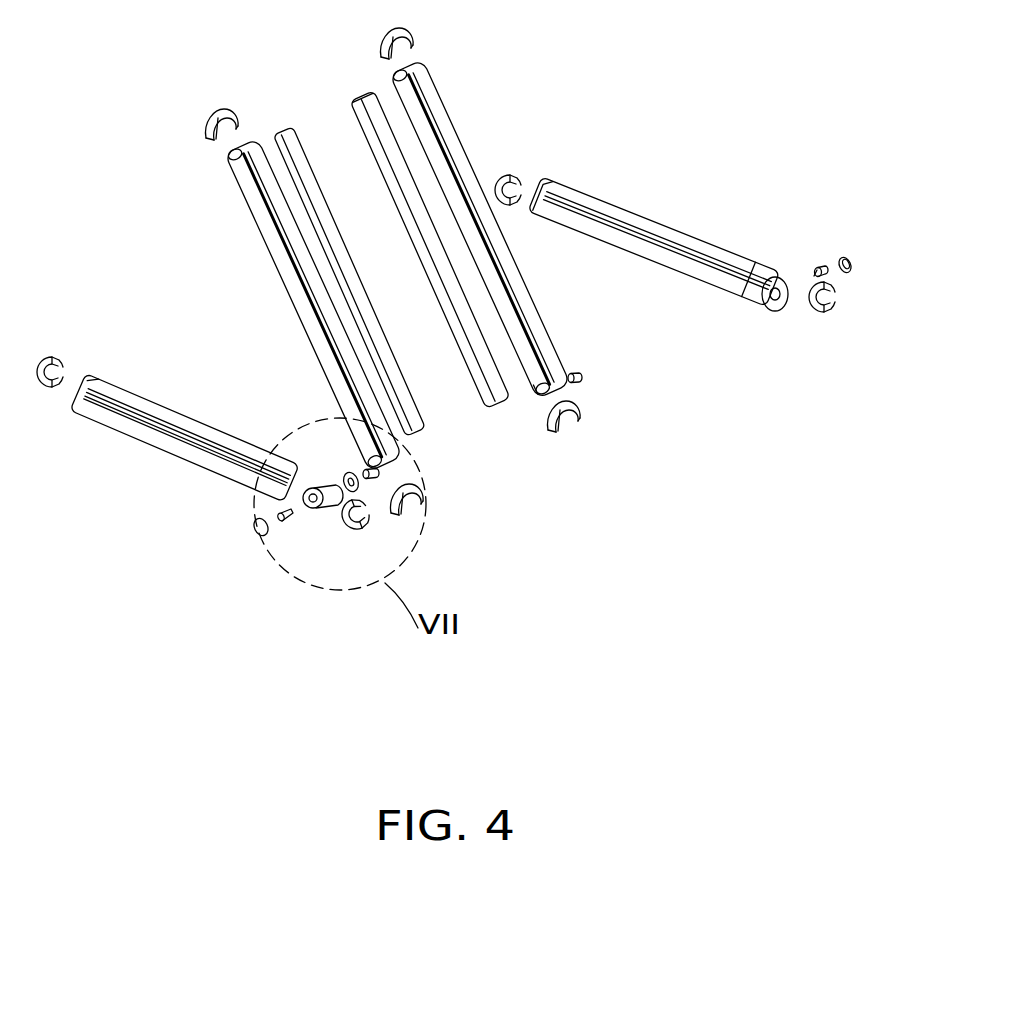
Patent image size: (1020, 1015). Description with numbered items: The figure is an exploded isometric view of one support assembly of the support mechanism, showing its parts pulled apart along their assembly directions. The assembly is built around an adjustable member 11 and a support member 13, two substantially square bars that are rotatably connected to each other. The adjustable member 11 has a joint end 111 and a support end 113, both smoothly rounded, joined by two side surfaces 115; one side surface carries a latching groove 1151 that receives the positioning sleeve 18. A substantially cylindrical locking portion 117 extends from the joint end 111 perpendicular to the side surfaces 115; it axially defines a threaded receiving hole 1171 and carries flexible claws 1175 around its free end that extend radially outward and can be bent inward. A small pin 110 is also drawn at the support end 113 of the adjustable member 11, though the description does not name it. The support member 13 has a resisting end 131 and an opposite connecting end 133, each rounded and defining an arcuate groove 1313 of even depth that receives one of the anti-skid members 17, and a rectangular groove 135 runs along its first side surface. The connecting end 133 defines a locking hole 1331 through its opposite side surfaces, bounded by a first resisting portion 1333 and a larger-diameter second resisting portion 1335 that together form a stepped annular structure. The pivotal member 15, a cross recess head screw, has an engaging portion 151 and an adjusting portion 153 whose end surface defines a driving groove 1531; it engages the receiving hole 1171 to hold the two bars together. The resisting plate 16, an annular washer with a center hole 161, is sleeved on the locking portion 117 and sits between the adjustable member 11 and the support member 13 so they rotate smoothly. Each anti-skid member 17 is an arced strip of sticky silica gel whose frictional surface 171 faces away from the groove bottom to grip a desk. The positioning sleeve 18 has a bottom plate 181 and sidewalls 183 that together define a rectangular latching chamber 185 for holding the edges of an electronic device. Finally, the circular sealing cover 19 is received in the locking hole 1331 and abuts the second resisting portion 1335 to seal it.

The adjustable member 11 is at (485, 230).
The pivot pin 110 is at (563, 388).
The joint end 111 is at (555, 365).
The support end 113 is at (436, 90).
The side surfaces 115 is at (400, 82).
The latching groove 1151 is at (440, 155).
The locking portion 117 is at (323, 301).
The receiving hole 1171 is at (409, 484).
The claws 1175 is at (293, 440).
The support member 13 is at (655, 253).
The resisting end 131 is at (560, 190).
The connecting end 133 is at (752, 270).
The groove 135 is at (687, 270).
The arcuate groove 1313 is at (785, 303).
The locking hole 1331 is at (389, 560).
The first resisting portion 1333 is at (345, 512).
The second resisting portion 1335 is at (312, 508).
The pivotal member 15 is at (817, 268).
The engaging portion 151 is at (256, 500).
The adjusting portion 153 is at (254, 518).
The driving groove 1531 is at (280, 520).
The resisting plate 16 is at (296, 444).
The center hole 161 is at (405, 512).
The anti-skid members 17 is at (823, 343).
The frictional surface 171 is at (832, 300).
The positioning sleeve 18 is at (421, 289).
The bottom plate 181 is at (296, 173).
The sidewalls 183 is at (410, 193).
The latching chamber 185 is at (360, 108).
The sealing cover 19 is at (848, 258).